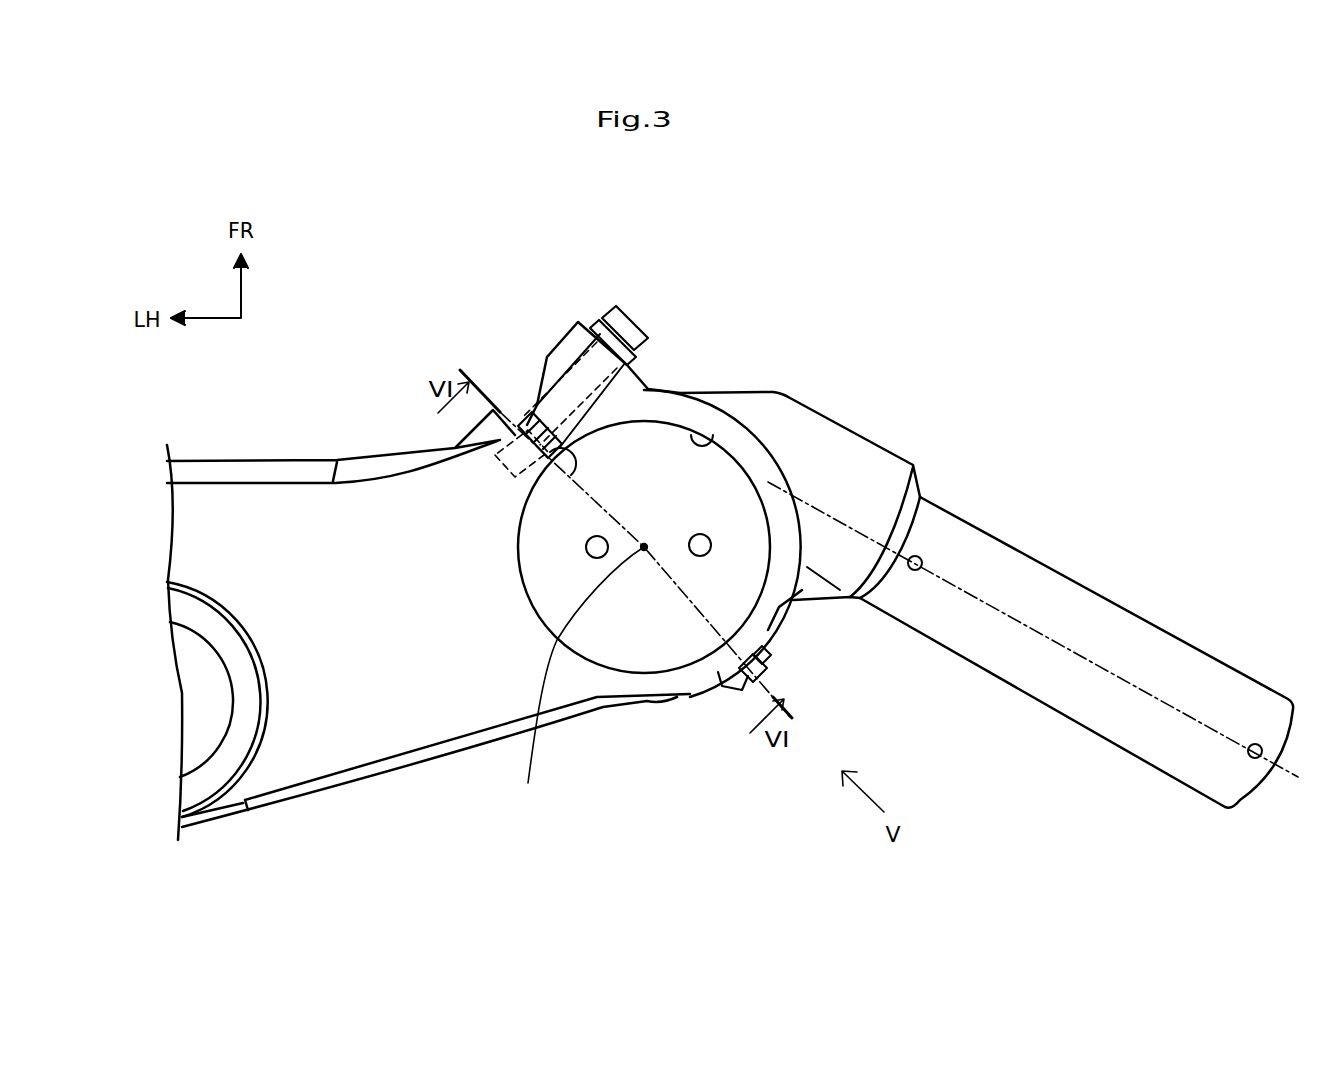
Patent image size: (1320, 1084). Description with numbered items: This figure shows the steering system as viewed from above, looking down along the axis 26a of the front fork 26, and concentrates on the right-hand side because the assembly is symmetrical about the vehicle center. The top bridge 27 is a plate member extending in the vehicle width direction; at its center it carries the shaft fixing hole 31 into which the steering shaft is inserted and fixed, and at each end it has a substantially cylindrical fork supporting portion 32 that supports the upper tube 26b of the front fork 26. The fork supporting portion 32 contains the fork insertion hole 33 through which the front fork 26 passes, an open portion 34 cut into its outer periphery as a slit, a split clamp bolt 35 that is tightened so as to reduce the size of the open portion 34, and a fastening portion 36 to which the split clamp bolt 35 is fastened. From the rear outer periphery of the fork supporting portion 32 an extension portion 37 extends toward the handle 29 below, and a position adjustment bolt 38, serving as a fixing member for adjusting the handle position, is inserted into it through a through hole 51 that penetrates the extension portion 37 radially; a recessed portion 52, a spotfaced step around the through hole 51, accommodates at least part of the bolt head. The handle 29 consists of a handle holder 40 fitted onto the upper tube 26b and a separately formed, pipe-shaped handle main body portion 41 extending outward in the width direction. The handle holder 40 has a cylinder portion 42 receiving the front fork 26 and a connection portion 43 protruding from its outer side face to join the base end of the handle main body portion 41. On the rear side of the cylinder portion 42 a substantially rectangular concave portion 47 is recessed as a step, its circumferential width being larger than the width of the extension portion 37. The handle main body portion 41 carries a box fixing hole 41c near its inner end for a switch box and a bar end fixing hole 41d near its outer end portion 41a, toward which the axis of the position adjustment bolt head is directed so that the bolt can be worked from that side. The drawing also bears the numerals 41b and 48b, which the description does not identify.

The front fork 26 is at (603, 637).
The axis of the front fork 26a is at (577, 679).
The upper tube 26b is at (638, 657).
The top bridge 27 is at (278, 460).
The handle 29 is at (797, 390).
The shaft fixing hole 31 is at (250, 698).
The fork supporting portion 32 is at (687, 398).
The fork insertion hole 33 is at (712, 445).
The open portion 34 is at (566, 468).
The split clamp bolt 35 is at (622, 322).
The fastening portion 36 is at (472, 432).
The extension portion 37 is at (738, 687).
The position adjustment bolt 38 is at (765, 675).
The handle holder 40 is at (782, 455).
The handle main body portion 41 is at (978, 548).
The outer end portion 41a is at (1258, 788).
The lever axis 41b is at (1117, 670).
The box fixing hole 41c is at (922, 557).
The bar end fixing hole 41d is at (1261, 744).
The cylinder portion 42 is at (786, 486).
The connection portion 43 is at (865, 465).
The concave portion 47 is at (702, 700).
The hole 48b is at (743, 655).
The through hole 51 is at (767, 645).
The recessed portion 52 is at (767, 662).